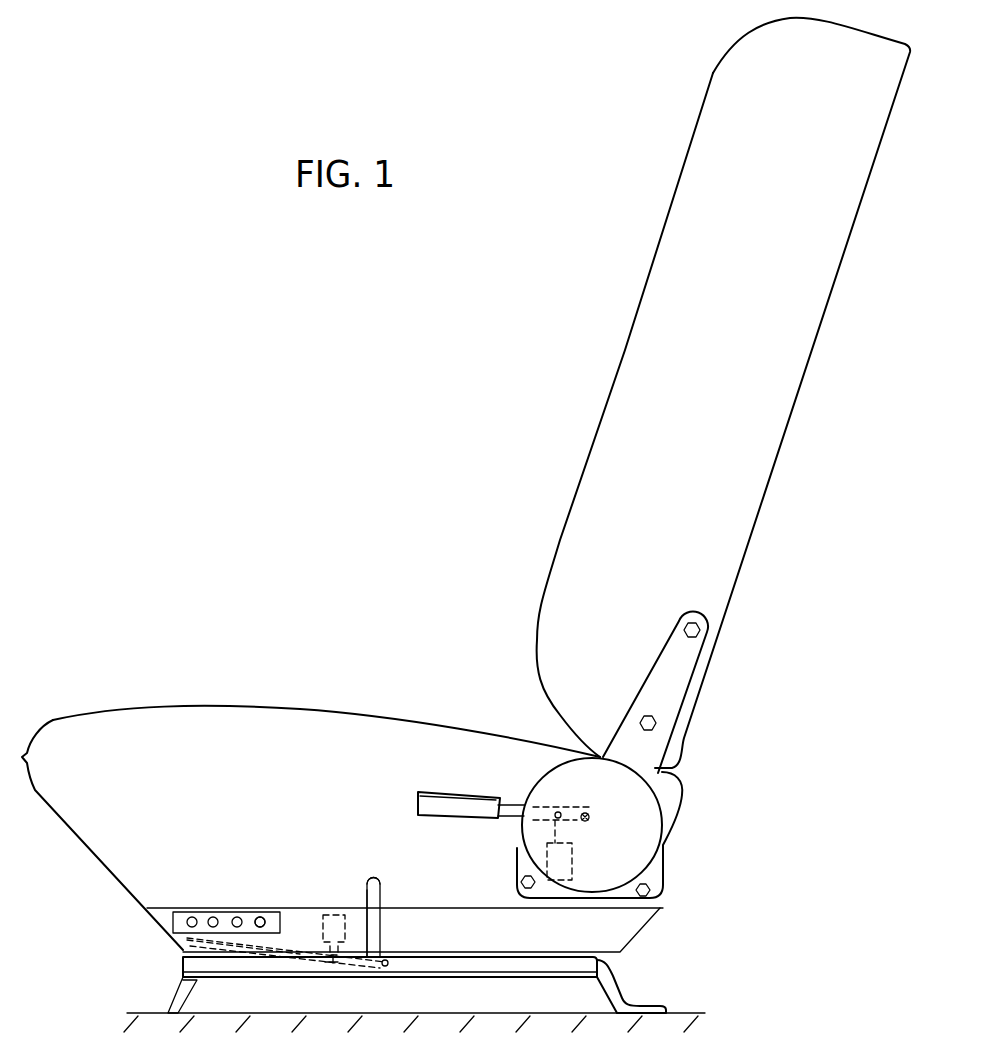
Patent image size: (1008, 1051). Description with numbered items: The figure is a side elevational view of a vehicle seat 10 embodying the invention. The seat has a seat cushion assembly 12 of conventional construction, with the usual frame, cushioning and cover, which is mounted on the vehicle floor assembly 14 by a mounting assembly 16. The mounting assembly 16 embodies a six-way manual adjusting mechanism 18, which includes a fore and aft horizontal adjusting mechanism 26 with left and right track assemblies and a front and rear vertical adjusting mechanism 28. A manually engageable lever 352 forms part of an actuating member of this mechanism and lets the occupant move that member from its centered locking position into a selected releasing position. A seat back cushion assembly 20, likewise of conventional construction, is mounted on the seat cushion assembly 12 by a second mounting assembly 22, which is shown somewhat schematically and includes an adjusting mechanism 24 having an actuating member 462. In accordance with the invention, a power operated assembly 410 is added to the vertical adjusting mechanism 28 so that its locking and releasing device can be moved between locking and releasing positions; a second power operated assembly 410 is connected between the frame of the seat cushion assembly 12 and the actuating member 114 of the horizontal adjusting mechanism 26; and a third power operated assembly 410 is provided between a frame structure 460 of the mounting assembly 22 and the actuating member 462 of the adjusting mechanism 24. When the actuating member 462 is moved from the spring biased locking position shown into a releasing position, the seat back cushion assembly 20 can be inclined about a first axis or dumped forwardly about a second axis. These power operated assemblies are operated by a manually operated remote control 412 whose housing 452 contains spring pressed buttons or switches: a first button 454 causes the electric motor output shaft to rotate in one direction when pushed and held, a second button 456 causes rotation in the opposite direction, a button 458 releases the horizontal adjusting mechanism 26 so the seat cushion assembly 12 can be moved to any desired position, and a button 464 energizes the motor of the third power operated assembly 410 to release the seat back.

The vehicle seat 10 is at (460, 580).
The seat cushion assembly 12 is at (313, 727).
The vehicle floor assembly 14 is at (677, 1012).
The mounting assembly 16 is at (182, 946).
The six-way manual adjusting mechanism 18 is at (382, 896).
The seat back cushion assembly 20 is at (620, 415).
The second mounting assembly 22 is at (663, 843).
The adjusting mechanism 24 is at (466, 793).
The fore and aft horizontal adjusting mechanism 26 is at (285, 957).
The front and rear vertical adjusting mechanism 28 is at (364, 898).
The actuating member 114 is at (205, 957).
The manually engageable lever 352 is at (373, 875).
The power operated assembly 410 is at (560, 863).
The manually operated remote control 412 is at (230, 906).
The housing 452 is at (175, 922).
The first spring pressed button 454 is at (192, 916).
The second spring pressed button 456 is at (211, 916).
The button 458 is at (258, 916).
The frame structure 460 is at (648, 805).
The actuating member 462 is at (438, 810).
The button 464 is at (264, 916).